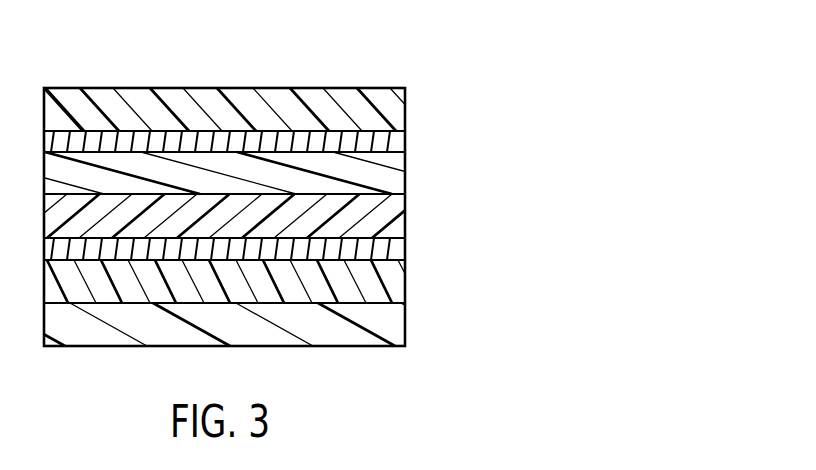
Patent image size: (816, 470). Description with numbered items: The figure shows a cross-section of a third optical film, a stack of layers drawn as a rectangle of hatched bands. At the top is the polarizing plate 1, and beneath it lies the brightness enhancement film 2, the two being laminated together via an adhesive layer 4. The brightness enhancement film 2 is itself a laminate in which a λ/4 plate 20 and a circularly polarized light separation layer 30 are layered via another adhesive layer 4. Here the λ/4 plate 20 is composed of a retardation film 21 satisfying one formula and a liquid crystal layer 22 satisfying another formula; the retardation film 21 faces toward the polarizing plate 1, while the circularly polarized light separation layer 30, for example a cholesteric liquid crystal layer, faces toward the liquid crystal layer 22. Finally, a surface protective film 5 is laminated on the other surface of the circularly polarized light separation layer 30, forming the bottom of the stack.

The polarizing plate 1 is at (388, 112).
The brightness enhancement film 2 is at (286, 217).
The adhesive layer 4 is at (388, 147).
The protective film 5 is at (388, 325).
The λ/4 plate 20 is at (265, 195).
The retardation film 21 is at (388, 173).
The liquid crystal layer 22 is at (243, 216).
The circularly polarized light separation layer 30 is at (388, 280).